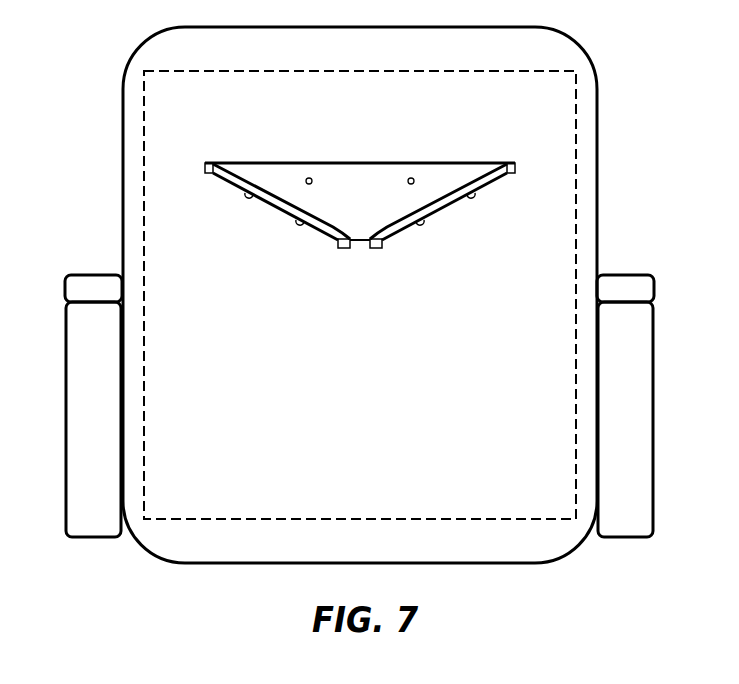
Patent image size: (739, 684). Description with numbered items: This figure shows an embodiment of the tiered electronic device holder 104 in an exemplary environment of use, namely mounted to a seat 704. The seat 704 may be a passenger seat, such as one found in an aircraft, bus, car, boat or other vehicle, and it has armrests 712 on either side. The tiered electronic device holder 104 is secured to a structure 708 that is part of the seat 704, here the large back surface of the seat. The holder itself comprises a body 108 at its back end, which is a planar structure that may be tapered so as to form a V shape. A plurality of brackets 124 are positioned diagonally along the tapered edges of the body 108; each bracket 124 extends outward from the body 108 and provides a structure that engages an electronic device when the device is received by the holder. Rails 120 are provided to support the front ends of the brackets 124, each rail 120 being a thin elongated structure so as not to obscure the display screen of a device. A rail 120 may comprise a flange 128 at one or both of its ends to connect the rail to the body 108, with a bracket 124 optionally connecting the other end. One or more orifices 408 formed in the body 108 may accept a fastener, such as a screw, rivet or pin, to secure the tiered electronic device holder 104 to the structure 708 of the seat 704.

The tiered electronic device holder 104 is at (360, 186).
The body 108 is at (379, 206).
The rail 120 is at (248, 181).
The bracket 124 is at (487, 222).
The flange 128 is at (204, 168).
The mounting orifice 408 is at (309, 177).
The seat 704 is at (74, 138).
The structure 708 is at (436, 520).
The armrest 712 is at (105, 275).